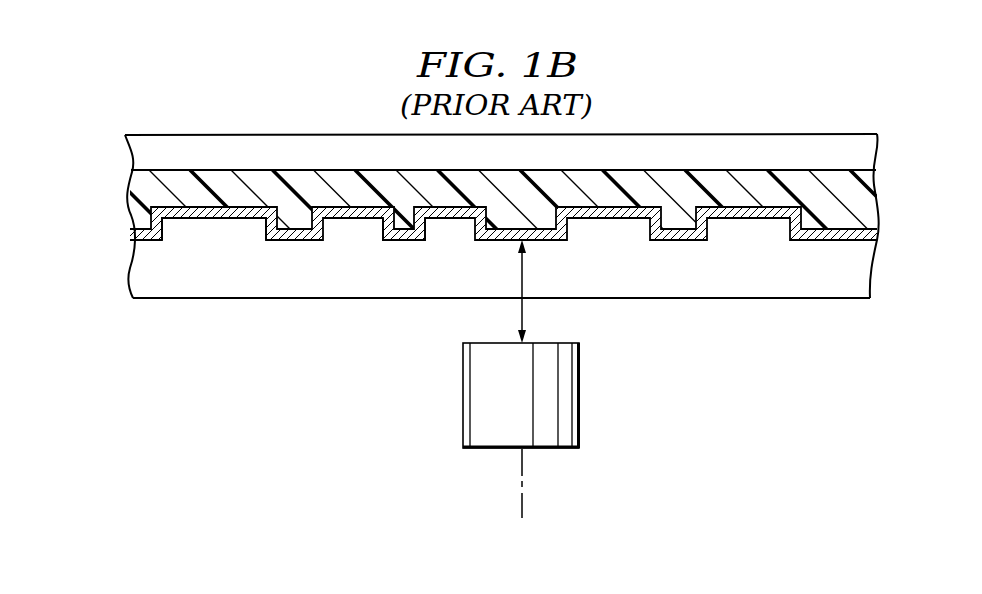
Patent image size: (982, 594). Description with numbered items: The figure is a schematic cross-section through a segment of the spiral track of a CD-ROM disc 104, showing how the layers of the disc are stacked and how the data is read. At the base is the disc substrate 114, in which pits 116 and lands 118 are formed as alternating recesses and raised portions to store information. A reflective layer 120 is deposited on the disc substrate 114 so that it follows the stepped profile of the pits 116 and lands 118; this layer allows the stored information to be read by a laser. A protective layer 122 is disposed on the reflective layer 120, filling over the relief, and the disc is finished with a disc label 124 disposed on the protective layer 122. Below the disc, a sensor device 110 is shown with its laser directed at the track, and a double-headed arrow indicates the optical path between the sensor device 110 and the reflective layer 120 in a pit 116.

The CD-ROM disc 104 is at (485, 178).
The sensor device 110 is at (579, 395).
The disc substrate 114 is at (135, 279).
The pit 116 is at (213, 218).
The land 118 is at (408, 240).
The reflective layer 120 is at (133, 232).
The protective layer 122 is at (131, 192).
The disc label 124 is at (131, 149).